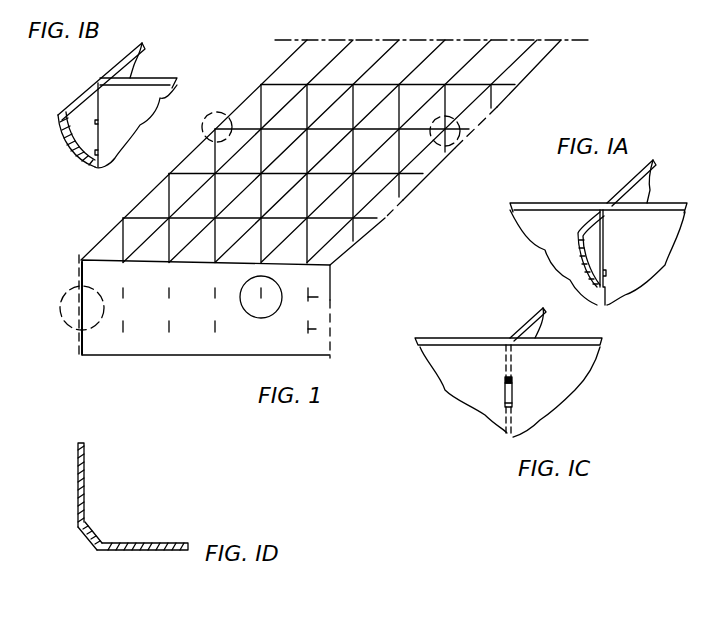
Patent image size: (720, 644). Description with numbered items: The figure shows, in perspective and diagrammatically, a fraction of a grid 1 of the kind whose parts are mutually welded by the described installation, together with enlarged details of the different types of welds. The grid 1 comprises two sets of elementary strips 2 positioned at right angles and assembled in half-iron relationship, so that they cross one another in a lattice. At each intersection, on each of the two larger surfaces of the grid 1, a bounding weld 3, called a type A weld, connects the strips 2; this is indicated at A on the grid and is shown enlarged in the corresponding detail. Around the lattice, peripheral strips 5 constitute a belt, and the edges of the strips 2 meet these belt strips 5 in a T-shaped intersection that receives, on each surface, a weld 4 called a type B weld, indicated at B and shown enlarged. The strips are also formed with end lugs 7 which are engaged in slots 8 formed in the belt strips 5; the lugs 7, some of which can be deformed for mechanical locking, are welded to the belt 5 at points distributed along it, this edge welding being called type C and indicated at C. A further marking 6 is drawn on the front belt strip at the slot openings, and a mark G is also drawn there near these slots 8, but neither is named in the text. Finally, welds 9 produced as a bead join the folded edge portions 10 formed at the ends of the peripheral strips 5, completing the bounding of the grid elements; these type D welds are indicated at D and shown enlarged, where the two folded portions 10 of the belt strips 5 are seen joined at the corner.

In FIG. 1, the grid 1 is at (268, 59).
In FIG. 1, the elementary strips 2 is at (343, 203).
In FIG. 1, the bounding weld 3 is at (262, 128).
In FIG. 1A, the bounding weld 3 is at (607, 203).
In FIG. 1, the weld 4 is at (164, 174).
In FIG. 1B, the weld 4 is at (98, 79).
In FIG. 1, the peripheral strips 5 is at (310, 278).
In FIG. 1D, the peripheral strips 5 is at (152, 551).
In FIG. 1, the slot 6 is at (261, 320).
In FIG. 1C, the slot 6 is at (503, 382).
In FIG. 1C, the end lugs 7 is at (512, 395).
In FIG. 1C, the slots 8 is at (512, 403).
In FIG. 1, the welds 9 is at (82, 287).
In FIG. 1D, the welds 9 is at (82, 537).
In FIG. 1D, the folded edge portions 10 is at (88, 533).
In FIG. 1, the type A weld location A is at (453, 147).
In FIG. 1, the type B weld location B is at (203, 121).
In FIG. 1, the type C weld location C is at (272, 313).
In FIG. 1, the type D weld location D is at (87, 330).
In FIG. 1, the tab mark G is at (318, 297).